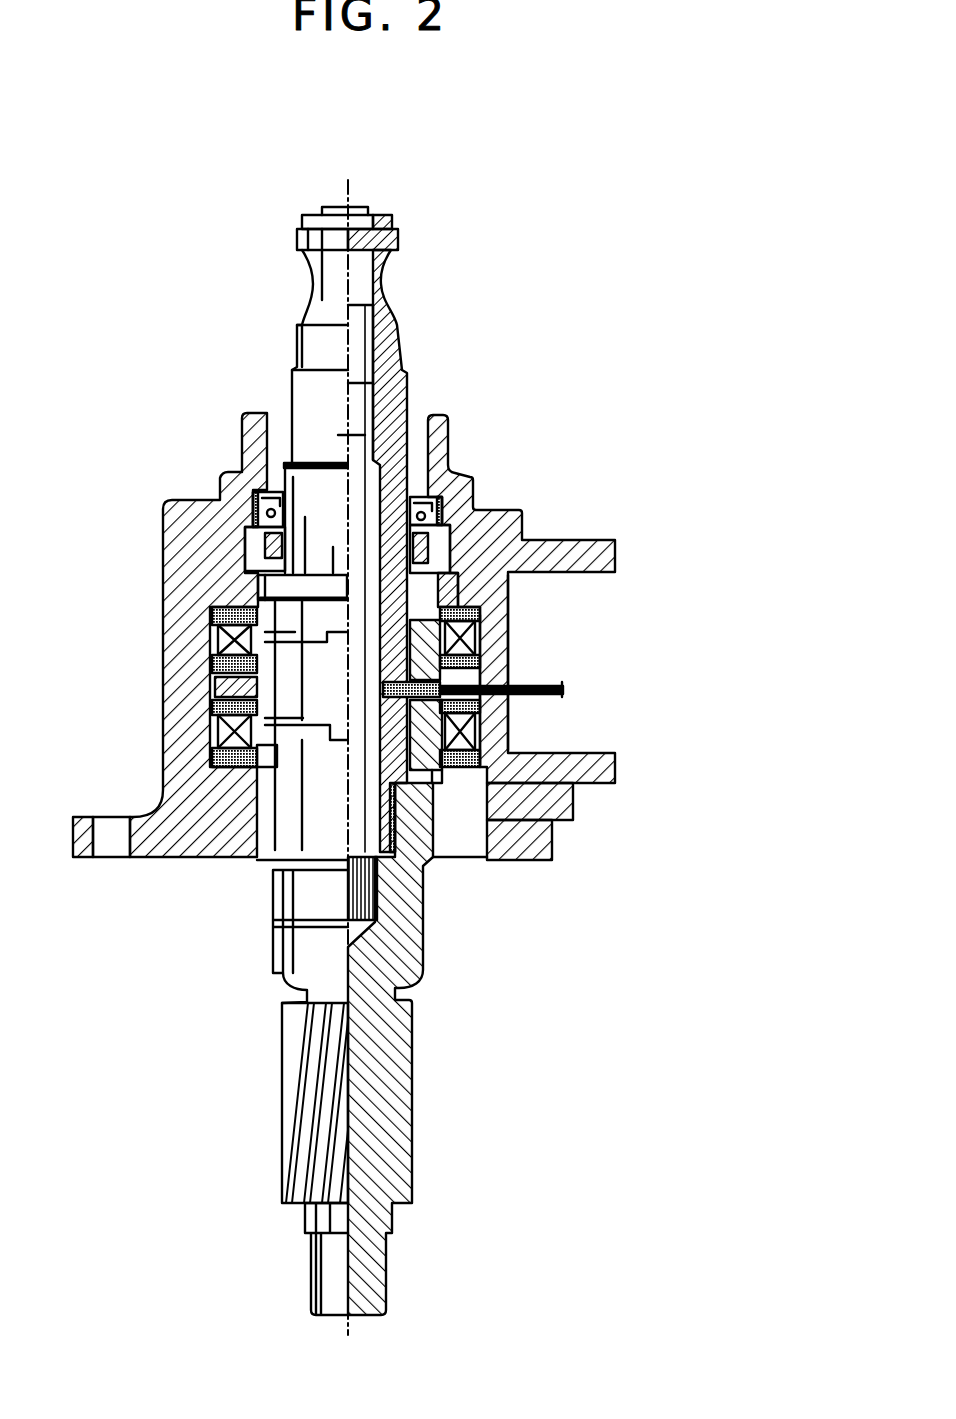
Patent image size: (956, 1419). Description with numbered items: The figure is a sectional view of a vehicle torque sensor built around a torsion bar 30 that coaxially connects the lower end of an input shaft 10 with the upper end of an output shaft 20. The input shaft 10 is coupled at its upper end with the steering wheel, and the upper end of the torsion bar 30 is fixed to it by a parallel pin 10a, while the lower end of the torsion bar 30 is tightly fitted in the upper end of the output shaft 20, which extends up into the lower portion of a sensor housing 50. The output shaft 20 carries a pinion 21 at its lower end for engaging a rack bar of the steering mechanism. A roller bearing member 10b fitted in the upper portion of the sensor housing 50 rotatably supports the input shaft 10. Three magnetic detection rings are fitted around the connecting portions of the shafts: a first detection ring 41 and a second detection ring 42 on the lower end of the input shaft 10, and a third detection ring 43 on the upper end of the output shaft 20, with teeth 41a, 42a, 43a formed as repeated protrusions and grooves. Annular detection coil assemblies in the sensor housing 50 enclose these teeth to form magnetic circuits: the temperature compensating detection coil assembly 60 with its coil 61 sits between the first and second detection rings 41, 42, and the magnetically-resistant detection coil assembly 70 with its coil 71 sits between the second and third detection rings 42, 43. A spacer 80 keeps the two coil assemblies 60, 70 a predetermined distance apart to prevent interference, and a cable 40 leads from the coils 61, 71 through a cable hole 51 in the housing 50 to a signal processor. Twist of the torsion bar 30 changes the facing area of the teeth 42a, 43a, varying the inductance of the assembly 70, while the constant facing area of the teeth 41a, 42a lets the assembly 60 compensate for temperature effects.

The input shaft 10 is at (388, 356).
The parallel pin 10a is at (397, 240).
The roller bearing member 10b is at (475, 500).
The output shaft 20 is at (408, 920).
The pinion 21 is at (287, 1088).
The torsion bar 30 is at (366, 460).
The cable 40 is at (552, 697).
The first detection ring 41 is at (280, 608).
The teeth of first detection ring 41a is at (284, 610).
The second detection ring 42 is at (284, 672).
The teeth of second detection ring 42a is at (296, 740).
The third detection ring 43 is at (268, 777).
The teeth of third detection ring 43a is at (268, 766).
The sensor housing 50 is at (155, 510).
The cable hole 51 is at (512, 693).
The temperature compensating detection coil assembly 60 is at (512, 625).
The coil of temperature compensating detection coil assembly 61 is at (480, 640).
The magnetically-resistant detection coil assembly 70 is at (490, 768).
The coil of magnetically-resistant detection coil assembly 71 is at (500, 738).
The spacer 80 is at (510, 672).